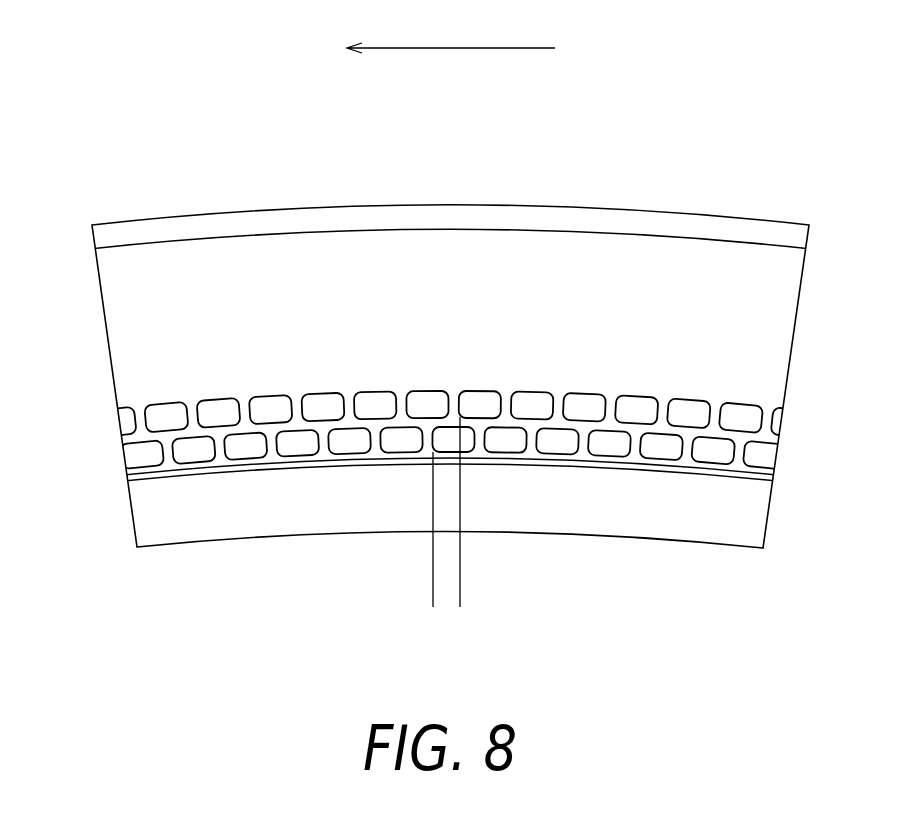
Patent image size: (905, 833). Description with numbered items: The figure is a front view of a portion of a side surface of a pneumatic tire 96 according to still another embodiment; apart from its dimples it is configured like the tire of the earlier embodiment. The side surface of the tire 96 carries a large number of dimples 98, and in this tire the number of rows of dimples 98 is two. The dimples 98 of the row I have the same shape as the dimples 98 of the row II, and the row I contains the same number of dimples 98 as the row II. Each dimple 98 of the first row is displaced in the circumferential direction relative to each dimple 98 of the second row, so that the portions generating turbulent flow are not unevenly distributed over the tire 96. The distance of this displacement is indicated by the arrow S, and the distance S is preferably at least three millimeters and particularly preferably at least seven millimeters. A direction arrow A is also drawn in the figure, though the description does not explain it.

The pneumatic tire 96 is at (637, 173).
The dimples 98 is at (437, 456).
The row I is at (104, 428).
The row II is at (105, 463).
The distance of displacement S is at (388, 593).
The feed direction A is at (451, 37).